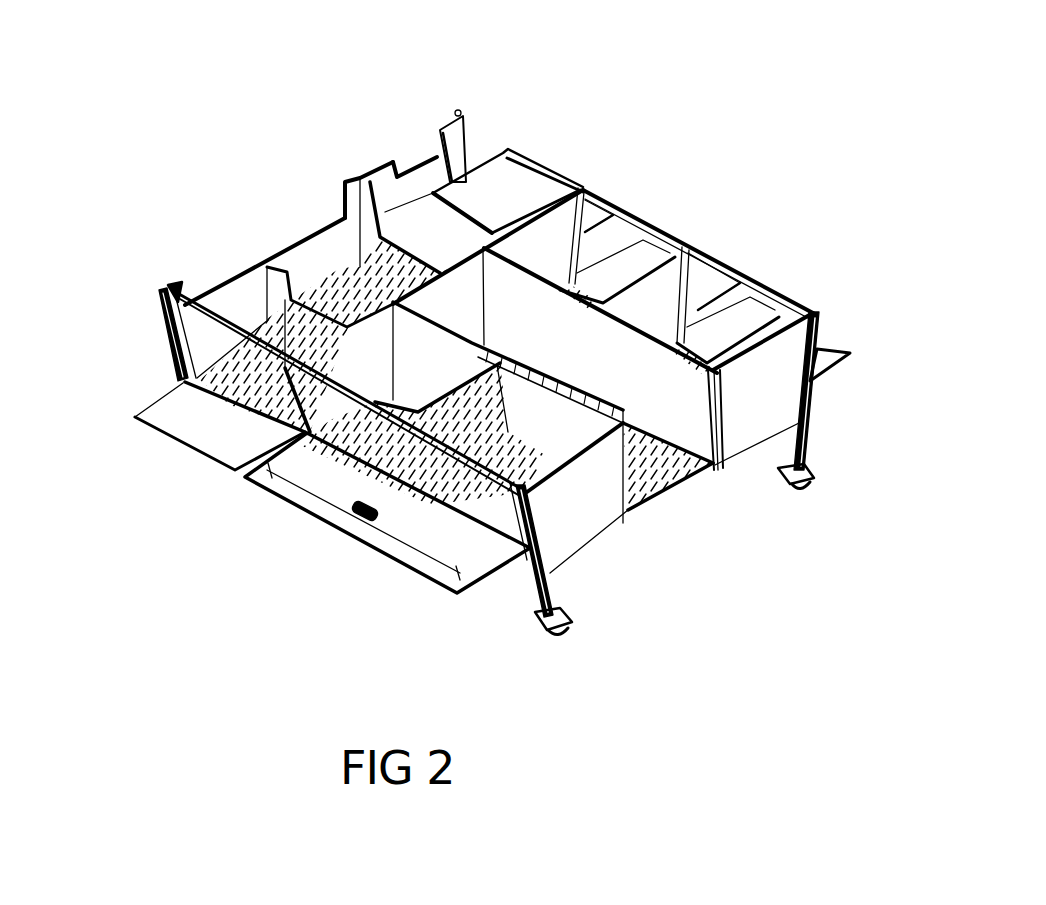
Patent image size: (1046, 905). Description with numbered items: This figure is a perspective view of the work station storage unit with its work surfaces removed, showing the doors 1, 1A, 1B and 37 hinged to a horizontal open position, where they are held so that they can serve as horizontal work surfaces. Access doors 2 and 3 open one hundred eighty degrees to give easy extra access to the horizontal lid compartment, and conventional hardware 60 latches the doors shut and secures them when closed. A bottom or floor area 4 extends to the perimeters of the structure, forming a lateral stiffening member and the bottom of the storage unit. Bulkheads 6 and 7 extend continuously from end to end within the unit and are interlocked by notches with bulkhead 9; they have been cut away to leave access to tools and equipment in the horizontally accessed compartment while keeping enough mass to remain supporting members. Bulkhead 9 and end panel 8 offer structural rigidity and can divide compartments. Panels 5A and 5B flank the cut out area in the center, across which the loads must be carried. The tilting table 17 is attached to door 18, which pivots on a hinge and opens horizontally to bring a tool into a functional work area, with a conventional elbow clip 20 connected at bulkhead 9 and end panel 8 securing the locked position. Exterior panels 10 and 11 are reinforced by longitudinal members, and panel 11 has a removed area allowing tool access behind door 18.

The door 1 is at (703, 290).
The door 1A is at (816, 347).
The door 1B is at (330, 477).
The access door 2 is at (240, 275).
The access door 3 is at (393, 160).
The floor area 4 is at (658, 470).
The panel 5A is at (765, 393).
The panel 5B is at (598, 495).
The bulkhead 6 is at (687, 387).
The bulkhead 7 is at (580, 433).
The end panel 8 is at (318, 262).
The bulkhead 9 is at (533, 237).
The exterior panel 10 is at (285, 413).
The exterior panel 11 is at (657, 228).
The tilting table 17 is at (528, 190).
The door 18 is at (525, 162).
The elbow clip 20 is at (425, 187).
The door 37 is at (213, 417).
The conventional hardware 60 is at (393, 540).